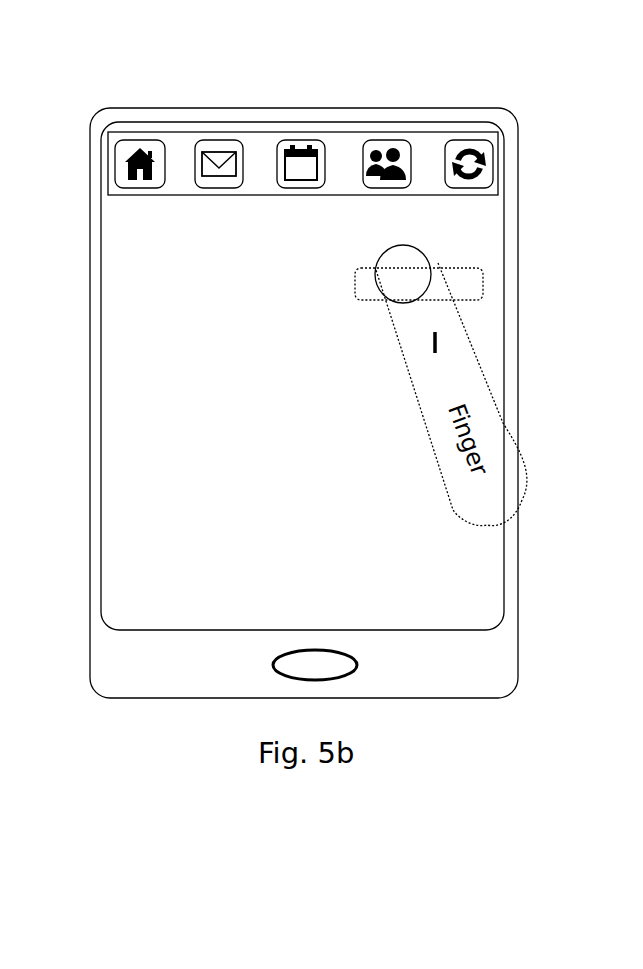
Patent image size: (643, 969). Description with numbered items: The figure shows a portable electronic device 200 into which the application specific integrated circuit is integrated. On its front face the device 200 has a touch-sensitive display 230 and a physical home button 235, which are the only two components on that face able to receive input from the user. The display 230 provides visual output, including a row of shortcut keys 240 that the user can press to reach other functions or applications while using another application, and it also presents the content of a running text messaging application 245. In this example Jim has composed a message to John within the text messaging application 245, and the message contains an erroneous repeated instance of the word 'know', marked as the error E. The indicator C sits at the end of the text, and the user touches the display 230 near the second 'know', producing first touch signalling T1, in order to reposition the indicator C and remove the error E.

The portable electronic device 200 is at (524, 651).
The touch-sensitive display 230 is at (460, 215).
The home button 235 is at (325, 660).
The shortcut keys 240 is at (262, 152).
The text messaging application 245 is at (245, 360).
The first touch signalling T1 is at (428, 262).
The error E is at (483, 280).
The indicator C is at (440, 330).